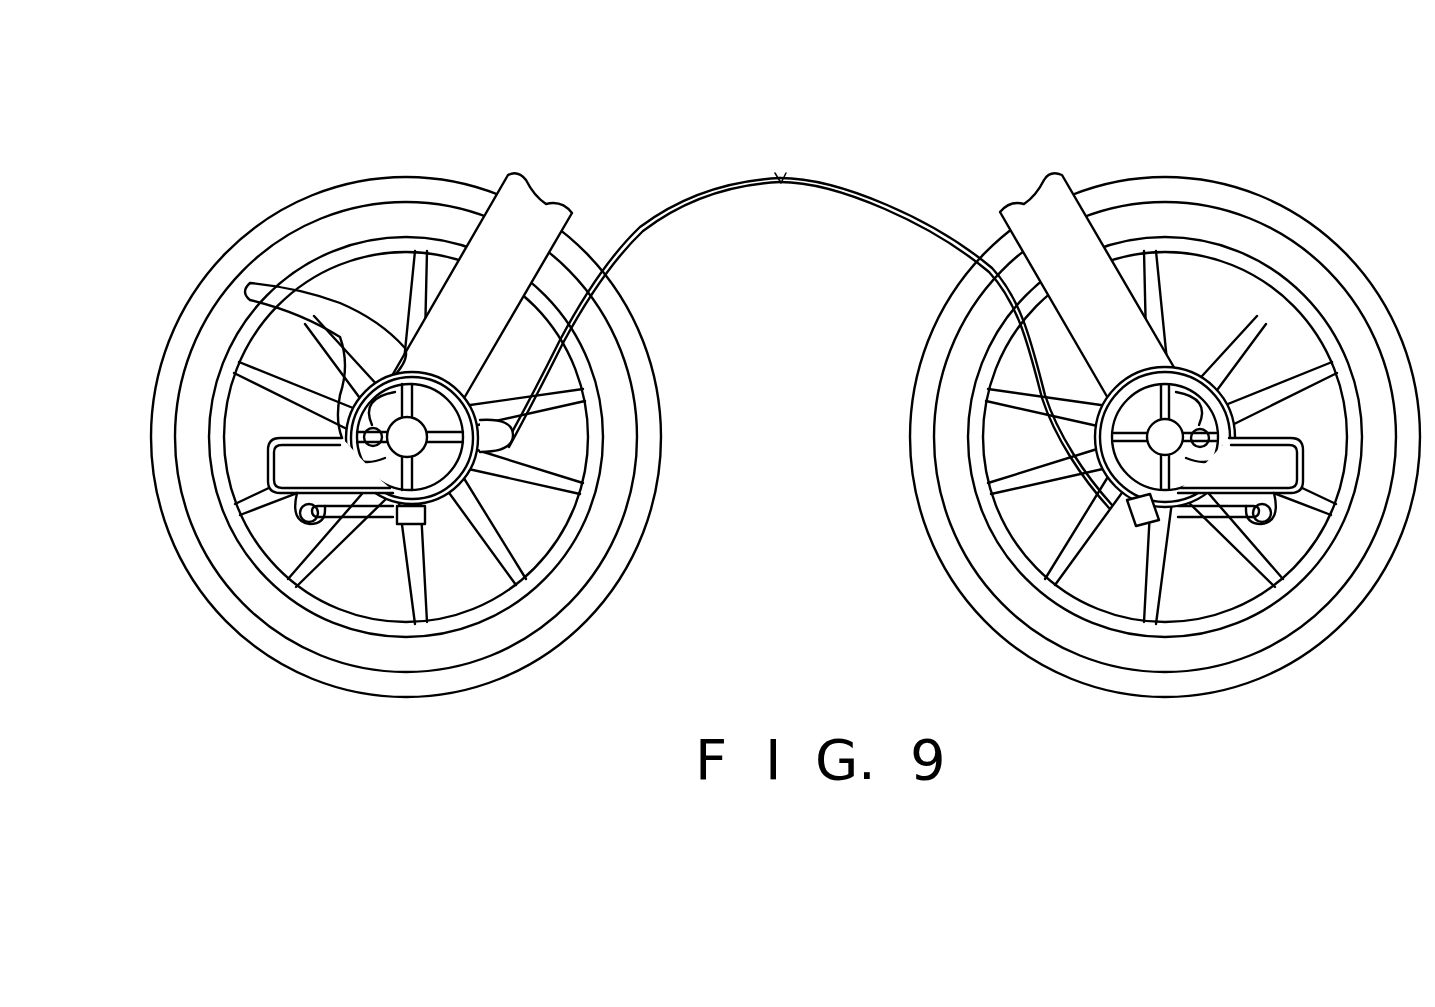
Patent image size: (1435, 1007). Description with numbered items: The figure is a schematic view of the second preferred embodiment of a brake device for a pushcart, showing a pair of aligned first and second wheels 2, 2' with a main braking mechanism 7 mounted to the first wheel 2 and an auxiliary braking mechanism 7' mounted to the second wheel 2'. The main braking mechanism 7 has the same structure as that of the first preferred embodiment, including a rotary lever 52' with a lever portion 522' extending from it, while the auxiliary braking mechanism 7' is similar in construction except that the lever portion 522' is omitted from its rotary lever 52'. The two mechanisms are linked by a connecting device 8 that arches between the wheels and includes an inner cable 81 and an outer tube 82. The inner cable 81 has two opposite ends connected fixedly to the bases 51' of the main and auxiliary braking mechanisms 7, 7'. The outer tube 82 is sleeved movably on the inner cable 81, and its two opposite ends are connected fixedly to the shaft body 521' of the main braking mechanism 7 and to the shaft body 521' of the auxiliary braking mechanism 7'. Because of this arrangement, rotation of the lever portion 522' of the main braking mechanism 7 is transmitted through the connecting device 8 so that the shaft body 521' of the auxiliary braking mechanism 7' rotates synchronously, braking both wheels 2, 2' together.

The first wheel 2 is at (268, 223).
The main braking mechanism 7 is at (366, 270).
The lever portion 522' is at (260, 342).
The connecting device 8 is at (610, 333).
The outer tube 82 is at (510, 440).
The base 51' is at (782, 552).
The inner cable 81 is at (374, 517).
The shaft body 521' is at (850, 549).
The rotary lever 52' is at (1165, 312).
The auxiliary braking mechanism 7' is at (1165, 385).
The second wheel 2' is at (1165, 407).